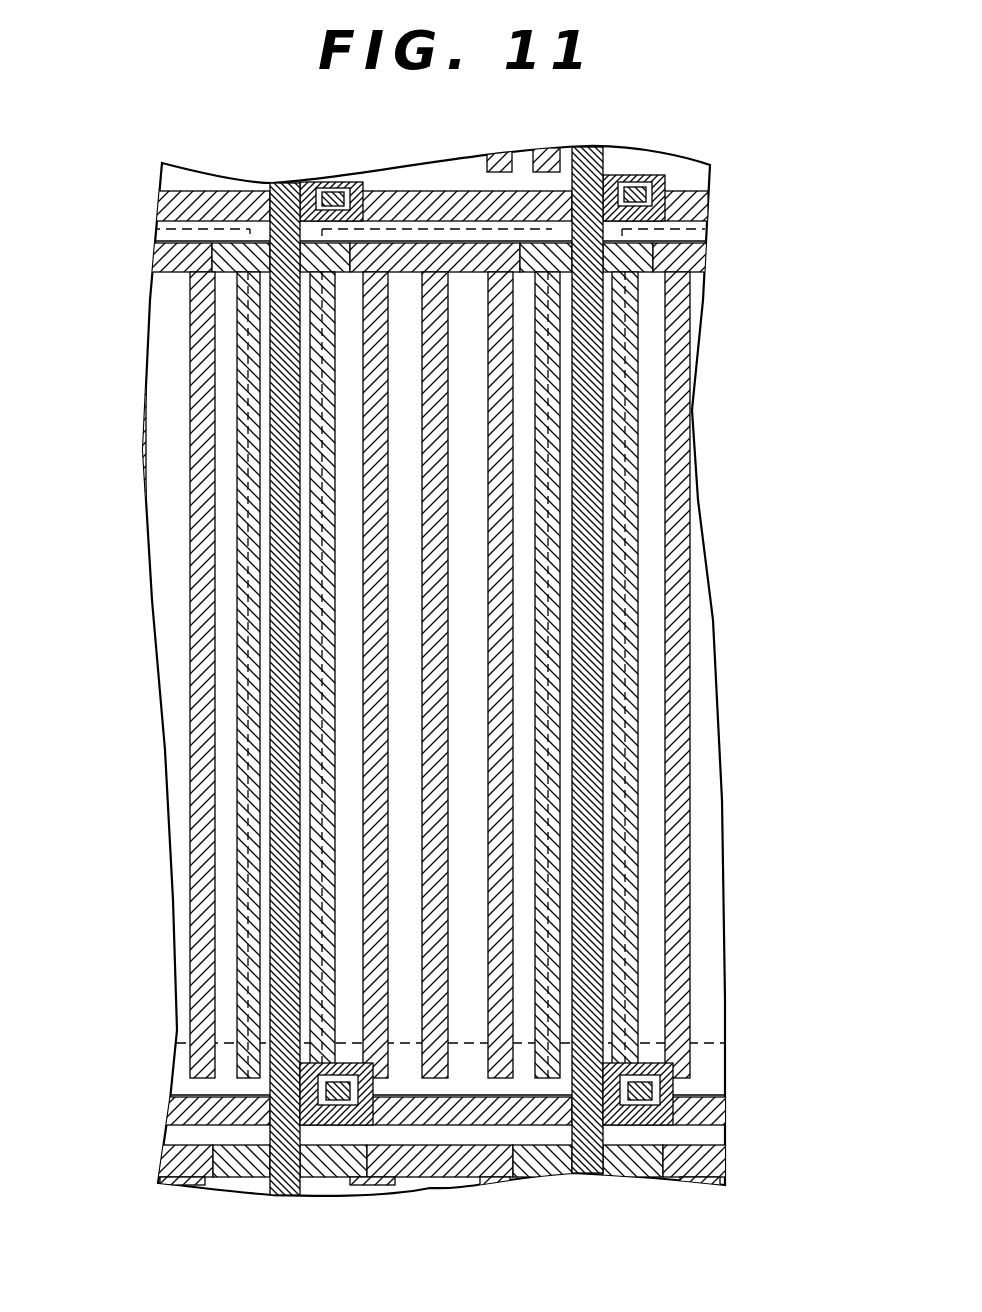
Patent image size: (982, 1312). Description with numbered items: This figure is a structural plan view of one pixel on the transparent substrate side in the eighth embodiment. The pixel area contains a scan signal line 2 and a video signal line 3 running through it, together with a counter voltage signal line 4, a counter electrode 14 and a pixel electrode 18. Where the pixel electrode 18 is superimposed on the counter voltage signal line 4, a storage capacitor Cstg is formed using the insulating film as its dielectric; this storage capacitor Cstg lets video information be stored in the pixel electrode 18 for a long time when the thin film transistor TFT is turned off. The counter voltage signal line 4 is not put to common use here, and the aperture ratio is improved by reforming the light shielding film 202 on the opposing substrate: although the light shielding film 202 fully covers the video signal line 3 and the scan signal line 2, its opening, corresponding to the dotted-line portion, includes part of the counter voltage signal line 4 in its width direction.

The scan signal line 2 is at (688, 206).
The video signal line 3 is at (590, 440).
The counter voltage signal line 4 is at (662, 283).
The storage capacitor Cstg is at (460, 286).
The counter electrode 14 is at (430, 558).
The pixel electrode 18 is at (383, 637).
The light shielding film 202 is at (545, 527).
The thin film transistor TFT is at (317, 1072).